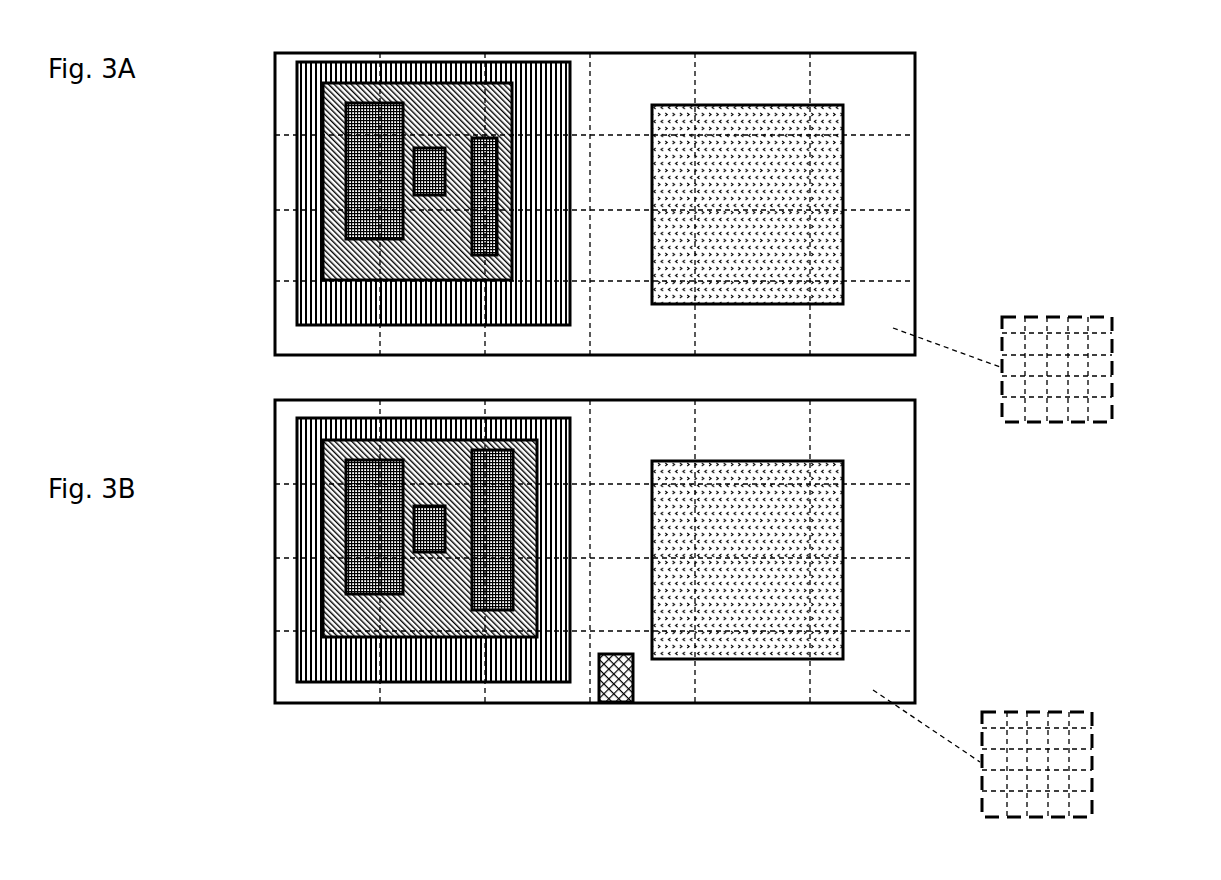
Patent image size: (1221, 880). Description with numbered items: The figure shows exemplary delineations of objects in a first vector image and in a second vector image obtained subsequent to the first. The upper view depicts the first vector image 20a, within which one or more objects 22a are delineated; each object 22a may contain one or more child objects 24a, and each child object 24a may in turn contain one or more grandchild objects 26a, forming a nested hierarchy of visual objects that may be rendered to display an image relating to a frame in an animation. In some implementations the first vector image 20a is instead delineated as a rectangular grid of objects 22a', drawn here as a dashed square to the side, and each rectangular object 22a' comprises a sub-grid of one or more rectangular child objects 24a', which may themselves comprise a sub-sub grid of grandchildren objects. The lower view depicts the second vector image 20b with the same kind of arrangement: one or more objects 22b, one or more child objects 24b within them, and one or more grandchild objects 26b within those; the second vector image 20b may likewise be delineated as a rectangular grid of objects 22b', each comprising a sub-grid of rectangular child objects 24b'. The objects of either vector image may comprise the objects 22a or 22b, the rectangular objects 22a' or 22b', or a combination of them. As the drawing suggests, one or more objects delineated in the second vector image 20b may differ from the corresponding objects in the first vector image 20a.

In FIG. 3A, the first vector image 20a is at (915, 94).
In FIG. 3A, the object 22a is at (590, 193).
In FIG. 3A, the child object 24a is at (359, 181).
In FIG. 3A, the grandchild object 26a is at (346, 197).
In FIG. 3A, the rectangular object 22a' is at (1002, 342).
In FIG. 3A, the rectangular child object 24a' is at (1097, 369).
In FIG. 3B, the second vector image 20b is at (915, 440).
In FIG. 3B, the object 22b is at (601, 560).
In FIG. 3B, the child object 24b is at (371, 538).
In FIG. 3B, the grandchild object 26b is at (346, 553).
In FIG. 3B, the rectangular object 22b' is at (982, 733).
In FIG. 3B, the rectangular child object 24b' is at (1080, 764).